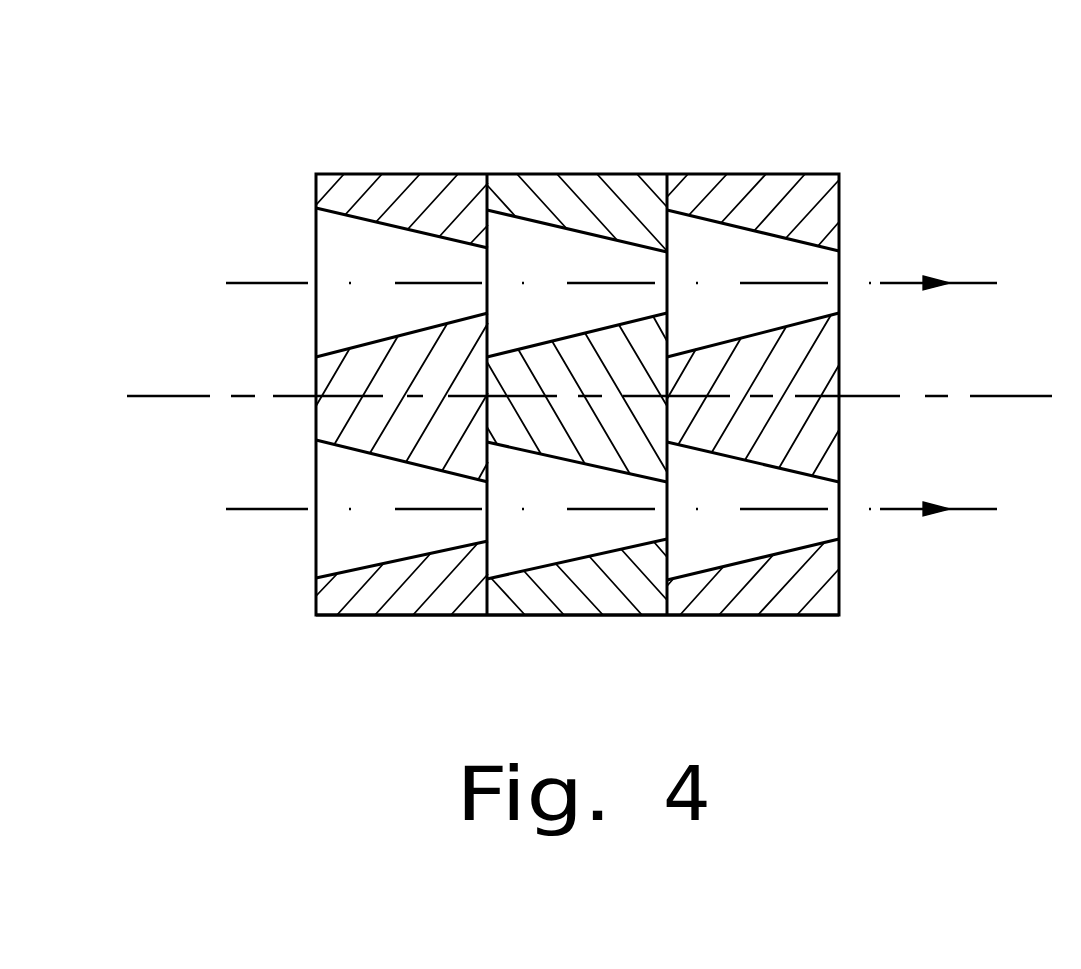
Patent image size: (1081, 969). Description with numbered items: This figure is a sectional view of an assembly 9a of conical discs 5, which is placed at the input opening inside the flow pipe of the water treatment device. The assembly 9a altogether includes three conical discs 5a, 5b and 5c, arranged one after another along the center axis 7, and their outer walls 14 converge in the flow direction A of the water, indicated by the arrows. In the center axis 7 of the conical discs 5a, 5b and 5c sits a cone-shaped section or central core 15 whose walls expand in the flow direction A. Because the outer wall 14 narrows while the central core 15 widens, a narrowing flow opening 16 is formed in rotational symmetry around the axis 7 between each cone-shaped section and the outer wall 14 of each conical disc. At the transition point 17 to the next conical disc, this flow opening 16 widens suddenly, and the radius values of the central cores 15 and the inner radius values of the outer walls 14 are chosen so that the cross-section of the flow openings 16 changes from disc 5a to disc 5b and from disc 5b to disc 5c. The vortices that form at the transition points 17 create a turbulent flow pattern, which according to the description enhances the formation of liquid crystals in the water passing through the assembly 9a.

The conical discs 5 is at (233, 153).
The first conical disc 5a is at (428, 605).
The second conical disc 5b is at (584, 606).
The third conical disc 5c is at (742, 606).
The center axis 7 is at (1013, 397).
The assembly of conical discs 9a is at (772, 152).
The outer walls 14 is at (325, 605).
The central core 15 is at (318, 413).
The flow opening 16 is at (325, 543).
The transition points 17 is at (488, 237).